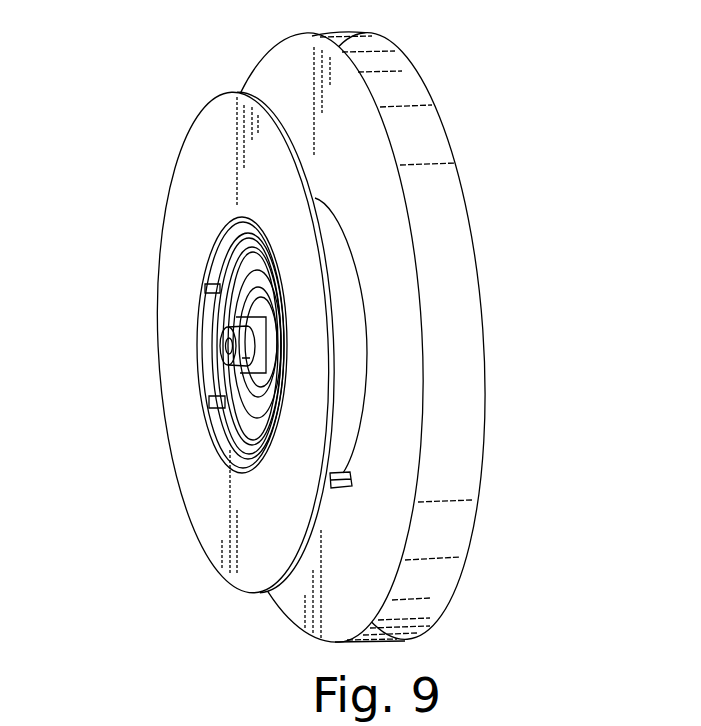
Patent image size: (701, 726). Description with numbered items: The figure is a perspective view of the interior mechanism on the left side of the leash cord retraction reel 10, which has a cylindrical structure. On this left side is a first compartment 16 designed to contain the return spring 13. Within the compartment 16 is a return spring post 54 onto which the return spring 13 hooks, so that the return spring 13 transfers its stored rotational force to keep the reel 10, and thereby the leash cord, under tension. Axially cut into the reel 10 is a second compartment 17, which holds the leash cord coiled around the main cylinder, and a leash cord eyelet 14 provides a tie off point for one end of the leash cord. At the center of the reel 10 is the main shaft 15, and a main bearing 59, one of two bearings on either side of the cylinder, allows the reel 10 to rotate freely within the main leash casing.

The leash cord retraction reel 10 is at (437, 180).
The return spring 13 is at (238, 224).
The leash cord eyelet 14 is at (353, 480).
The main shaft 15 is at (212, 333).
The first compartment 16 is at (222, 419).
The second compartment 17 is at (372, 259).
The return spring post 54 is at (207, 298).
The main bearing 59 is at (228, 360).